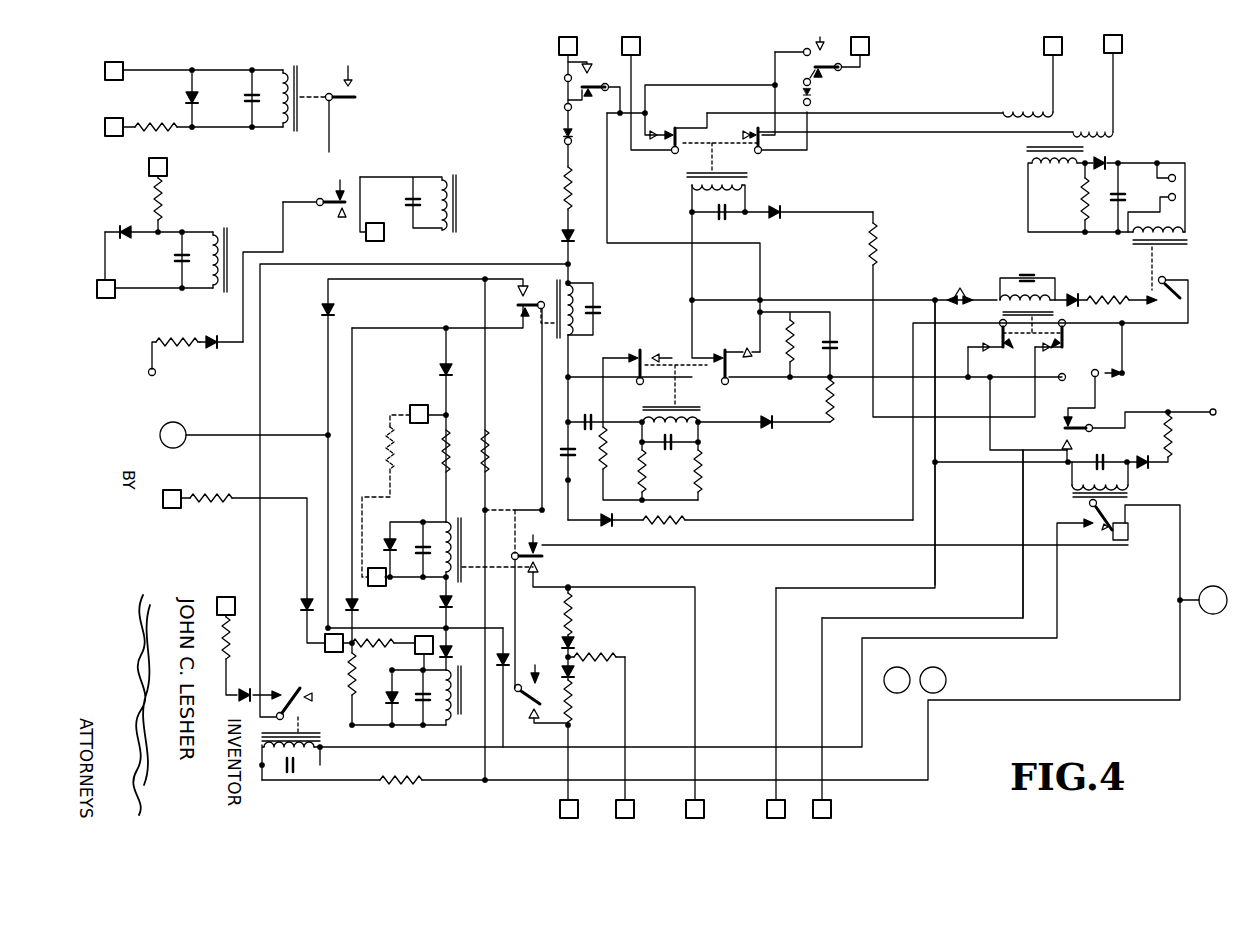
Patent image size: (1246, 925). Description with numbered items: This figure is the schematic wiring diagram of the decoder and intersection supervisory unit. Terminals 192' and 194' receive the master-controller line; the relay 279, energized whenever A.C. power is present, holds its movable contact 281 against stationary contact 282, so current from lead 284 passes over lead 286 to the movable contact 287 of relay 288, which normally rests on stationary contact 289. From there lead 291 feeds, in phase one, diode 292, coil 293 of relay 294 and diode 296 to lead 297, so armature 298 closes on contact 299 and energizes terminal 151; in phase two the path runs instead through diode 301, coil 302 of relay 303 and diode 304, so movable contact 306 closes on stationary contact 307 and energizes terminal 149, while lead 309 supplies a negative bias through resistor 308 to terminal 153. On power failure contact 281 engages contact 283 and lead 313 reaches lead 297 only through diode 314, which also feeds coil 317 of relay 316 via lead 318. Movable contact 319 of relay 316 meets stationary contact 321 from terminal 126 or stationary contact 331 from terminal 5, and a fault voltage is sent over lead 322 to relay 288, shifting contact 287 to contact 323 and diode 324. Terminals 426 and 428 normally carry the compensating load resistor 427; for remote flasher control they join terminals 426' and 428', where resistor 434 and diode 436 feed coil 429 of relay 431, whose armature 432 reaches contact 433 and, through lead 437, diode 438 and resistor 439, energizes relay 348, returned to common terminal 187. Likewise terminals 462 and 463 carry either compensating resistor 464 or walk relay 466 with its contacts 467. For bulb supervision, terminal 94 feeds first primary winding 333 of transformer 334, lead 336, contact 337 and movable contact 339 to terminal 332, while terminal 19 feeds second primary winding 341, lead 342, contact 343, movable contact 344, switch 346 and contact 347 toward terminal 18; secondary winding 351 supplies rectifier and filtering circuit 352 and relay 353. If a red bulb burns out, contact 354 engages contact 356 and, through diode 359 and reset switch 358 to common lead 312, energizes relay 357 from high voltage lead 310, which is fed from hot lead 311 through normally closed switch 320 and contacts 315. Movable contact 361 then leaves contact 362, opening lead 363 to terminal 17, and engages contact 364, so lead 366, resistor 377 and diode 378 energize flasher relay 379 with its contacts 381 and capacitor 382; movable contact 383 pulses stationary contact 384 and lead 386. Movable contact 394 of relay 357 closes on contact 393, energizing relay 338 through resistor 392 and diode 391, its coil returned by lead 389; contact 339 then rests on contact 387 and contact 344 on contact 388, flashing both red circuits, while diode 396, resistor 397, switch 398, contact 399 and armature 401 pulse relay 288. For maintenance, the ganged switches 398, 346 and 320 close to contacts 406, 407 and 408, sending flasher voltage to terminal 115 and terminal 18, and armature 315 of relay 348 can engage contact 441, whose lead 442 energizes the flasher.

The terminal 462 is at (120, 64).
The terminal 463 is at (130, 138).
The relay 466 is at (328, 68).
The set of contacts 467 is at (356, 96).
The terminal 428' is at (179, 165).
The resistor 434 is at (163, 218).
The diode 436 is at (127, 236).
The terminal 426' is at (123, 295).
The coil 429 is at (211, 286).
The relay 431 is at (242, 241).
The movable armature 432 is at (324, 194).
The stationary contact 433 is at (339, 224).
The lead 437 is at (277, 256).
The diode 438 is at (216, 350).
The resistor 439 is at (186, 350).
The relay 348 is at (424, 194).
The common terminal 187 is at (388, 248).
The terminal 192' is at (244, 428).
The lead 297 is at (327, 432).
The lead 322 is at (260, 556).
The second stationary contact 323 is at (538, 270).
The diode 324 is at (322, 310).
The terminal 126 is at (174, 490).
The terminal 5 is at (234, 594).
The stationary contact 331 is at (278, 692).
The stationary contact 321 is at (300, 692).
The movable contact 319 is at (300, 702).
The relay 316 is at (296, 727).
The coil 317 is at (318, 758).
The lead 318 is at (526, 784).
The lead 313 is at (754, 741).
The terminal 151 is at (568, 802).
The terminal 153 is at (634, 800).
The terminal 149 is at (704, 798).
The terminal 17 is at (836, 804).
The resistor 308 is at (600, 651).
The lead 291 is at (439, 328).
The diode 301 is at (447, 364).
The compensating resistor 464 is at (388, 460).
The coil 302 is at (442, 518).
The relay 303 is at (474, 550).
The diode 304 is at (448, 600).
The diode 296 is at (452, 648).
The diode 292 is at (366, 607).
The terminal 428 is at (334, 652).
The compensating load resistor 427 is at (396, 646).
The terminal 426 is at (398, 663).
The coil 293 is at (434, 726).
The relay 294 is at (467, 693).
The diode 314 is at (522, 644).
The lead 309 is at (510, 544).
The movable contact 306 is at (544, 556).
The stationary contact 307 is at (544, 578).
The armature 298 is at (541, 684).
The stationary contact 299 is at (528, 710).
The stationary contact 289 is at (519, 318).
The movable contact 287 is at (538, 301).
The relay 288 is at (572, 318).
The terminal 115 is at (558, 44).
The contact 406 is at (564, 78).
The stationary contact 399 is at (566, 94).
The movable contact 401 is at (590, 80).
The switch 398 is at (570, 124).
The resistor 397 is at (570, 192).
The diode 396 is at (574, 244).
The terminal 332 is at (622, 44).
The lead 386 is at (614, 234).
The stationary contact 337 is at (682, 130).
The stationary contact 387 is at (654, 132).
The movable contact 339 is at (672, 154).
The relay 338 is at (718, 160).
The lead 389 is at (690, 214).
The diode 391 is at (778, 209).
The resistor 392 is at (874, 258).
The stationary contact 343 is at (766, 136).
The stationary contact 388 is at (744, 132).
The movable contact 344 is at (766, 156).
The lead 342 is at (968, 138).
The lead 336 is at (970, 112).
The switch 346 is at (804, 90).
The stationary contact 407 is at (804, 52).
The stationary contact 347 is at (820, 82).
The terminal 18 is at (870, 46).
The first primary winding 333 is at (1046, 108).
The terminal 94 is at (1044, 46).
The second primary winding 341 is at (1074, 130).
The terminal 19 is at (1124, 50).
The transformer 334 is at (1055, 141).
The secondary winding 351 is at (1070, 172).
The rectifier and filtering circuit 352 is at (1142, 162).
The relay 353 is at (1154, 258).
The lead 312 is at (542, 378).
The contacts 381 is at (658, 354).
The capacitor 382 is at (588, 416).
The relay 379 is at (704, 430).
The diode 378 is at (772, 430).
The resistor 377 is at (838, 404).
The stationary contact 384 is at (740, 356).
The movable contact 383 is at (734, 384).
The lead 366 is at (862, 376).
The high voltage lead 310 is at (1188, 324).
The reset switch 358 is at (966, 306).
The relay 357 is at (1031, 304).
The diode 359 is at (1078, 296).
The stationary contact 356 is at (1136, 298).
The movable contact 354 is at (1196, 274).
The movable contact 361 is at (1000, 338).
The stationary contact 362 is at (1006, 352).
The stationary contact 364 is at (974, 356).
The movable contact 394 is at (1064, 338).
The stationary contact 393 is at (1052, 350).
The lead 363 is at (896, 616).
The contact 408 is at (1068, 380).
The switch 320 is at (1108, 380).
The contacts 315 is at (1082, 426).
The lead 311 is at (1210, 412).
The stationary contact 441 is at (1070, 446).
The lead 442 is at (1062, 452).
The relay 279 is at (1118, 479).
The movable contact 281 is at (1112, 514).
The stationary contact 283 is at (1084, 530).
The stationary contact 282 is at (1128, 542).
The lead 286 is at (988, 566).
The lead 284 is at (1182, 552).
The terminal 194' is at (1202, 593).